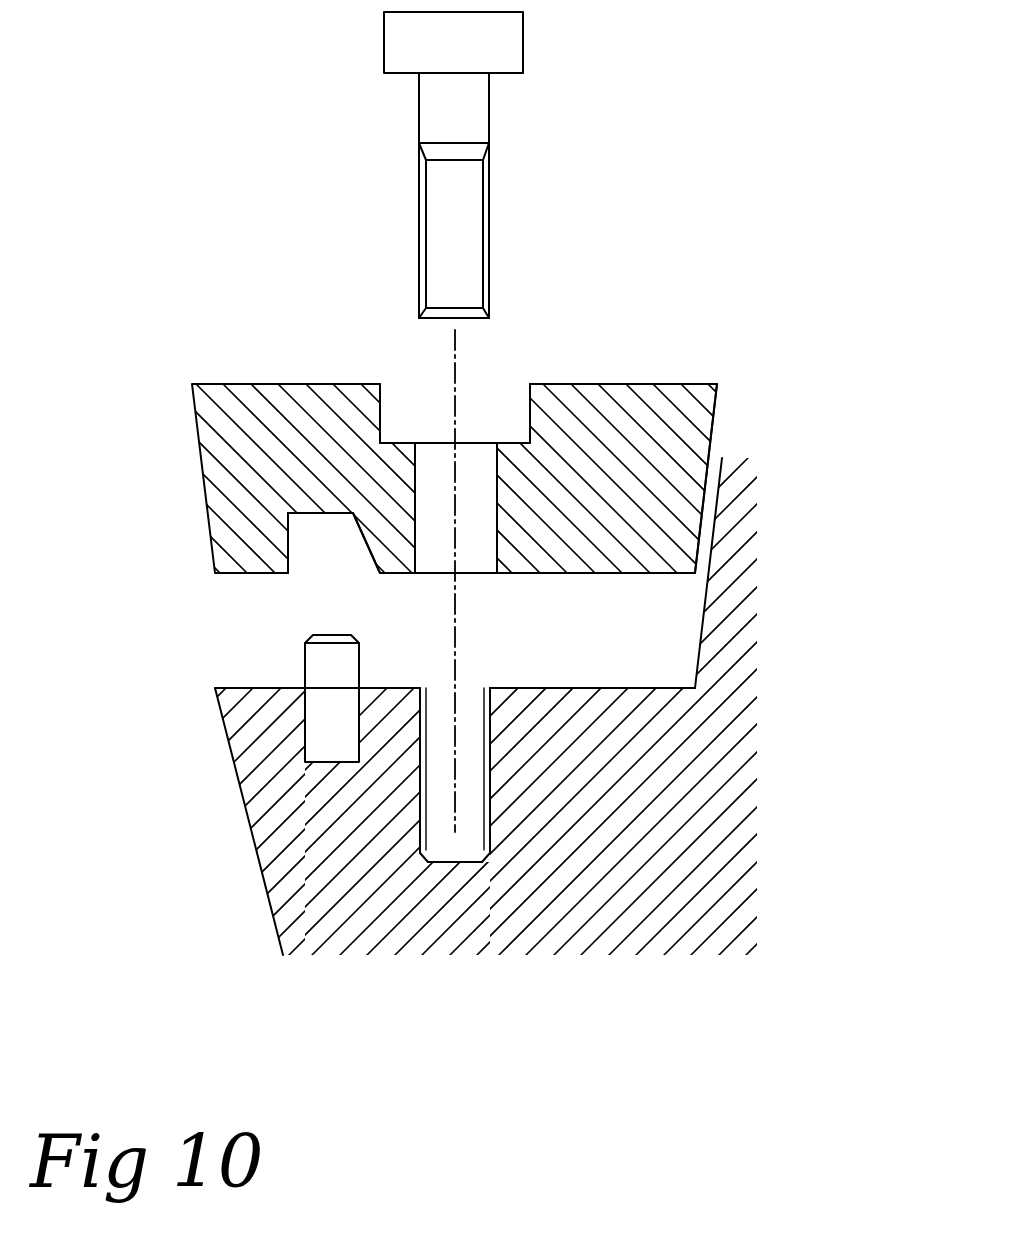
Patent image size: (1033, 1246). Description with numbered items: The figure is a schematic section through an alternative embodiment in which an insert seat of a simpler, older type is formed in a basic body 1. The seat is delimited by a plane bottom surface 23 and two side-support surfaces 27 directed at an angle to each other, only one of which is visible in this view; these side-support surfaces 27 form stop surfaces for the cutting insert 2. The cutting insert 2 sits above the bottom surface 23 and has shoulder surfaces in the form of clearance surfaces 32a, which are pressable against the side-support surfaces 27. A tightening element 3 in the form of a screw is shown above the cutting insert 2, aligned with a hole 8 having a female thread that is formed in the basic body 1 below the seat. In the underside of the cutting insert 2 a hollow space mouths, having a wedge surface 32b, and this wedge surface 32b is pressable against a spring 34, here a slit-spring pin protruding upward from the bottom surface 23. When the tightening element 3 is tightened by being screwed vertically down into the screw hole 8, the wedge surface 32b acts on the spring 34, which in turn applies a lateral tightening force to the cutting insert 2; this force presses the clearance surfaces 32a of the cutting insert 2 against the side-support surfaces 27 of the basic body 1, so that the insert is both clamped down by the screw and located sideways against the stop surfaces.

The basic body 1 is at (213, 840).
The cutting insert 2 is at (232, 340).
The tightening element 3 is at (556, 130).
The hole 8 is at (442, 704).
The bottom surface 23 is at (560, 688).
The side-support surface 27 is at (700, 630).
The clearance surface 32a is at (713, 408).
The wedge surface 32b is at (364, 548).
The spring 34 is at (307, 667).